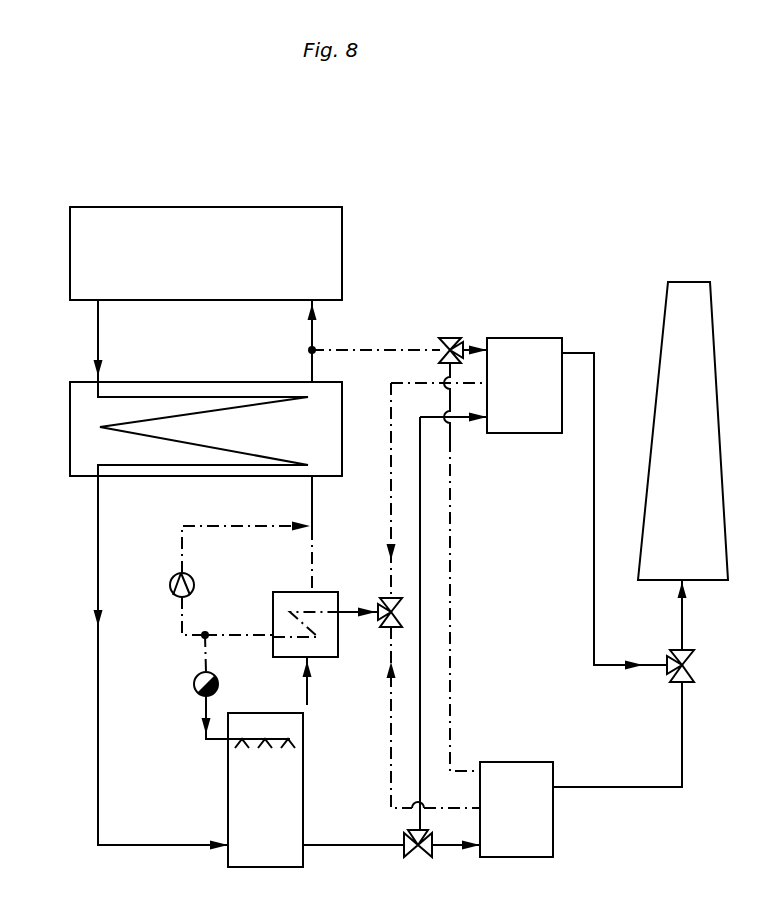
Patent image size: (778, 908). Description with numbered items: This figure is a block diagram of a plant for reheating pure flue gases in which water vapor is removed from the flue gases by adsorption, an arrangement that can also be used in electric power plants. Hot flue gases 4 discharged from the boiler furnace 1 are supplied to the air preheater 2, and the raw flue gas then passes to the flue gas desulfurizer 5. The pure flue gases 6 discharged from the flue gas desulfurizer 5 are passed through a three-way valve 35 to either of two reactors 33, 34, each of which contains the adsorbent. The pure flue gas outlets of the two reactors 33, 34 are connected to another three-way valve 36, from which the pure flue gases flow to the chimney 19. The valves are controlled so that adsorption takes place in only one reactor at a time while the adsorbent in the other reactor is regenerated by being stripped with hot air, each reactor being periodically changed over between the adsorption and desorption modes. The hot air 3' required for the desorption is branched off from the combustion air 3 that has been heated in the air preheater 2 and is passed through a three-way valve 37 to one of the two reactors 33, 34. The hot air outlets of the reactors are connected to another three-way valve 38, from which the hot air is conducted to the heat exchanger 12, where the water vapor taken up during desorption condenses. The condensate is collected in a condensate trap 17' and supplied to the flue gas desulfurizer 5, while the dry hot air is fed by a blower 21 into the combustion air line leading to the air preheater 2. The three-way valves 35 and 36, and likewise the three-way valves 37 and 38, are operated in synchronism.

The boiler furnace 1 is at (192, 222).
The air preheater 2 is at (78, 422).
The combustion air 3 is at (330, 341).
The hot air 3' is at (376, 333).
The hot flue gases 4 is at (96, 339).
The flue gas desulfurizer 5 is at (234, 805).
The pure flue gases 6 is at (352, 840).
The heat exchanger 12 is at (325, 600).
The condensate trap 17' is at (170, 683).
The chimney 19 is at (666, 395).
The blower 21 is at (172, 580).
The reactor 33 is at (537, 846).
The reactor 34 is at (530, 424).
The three-way valve 35 is at (406, 851).
The three-way valve 36 is at (672, 656).
The three-way valve 37 is at (453, 338).
The three-way valve 38 is at (378, 620).